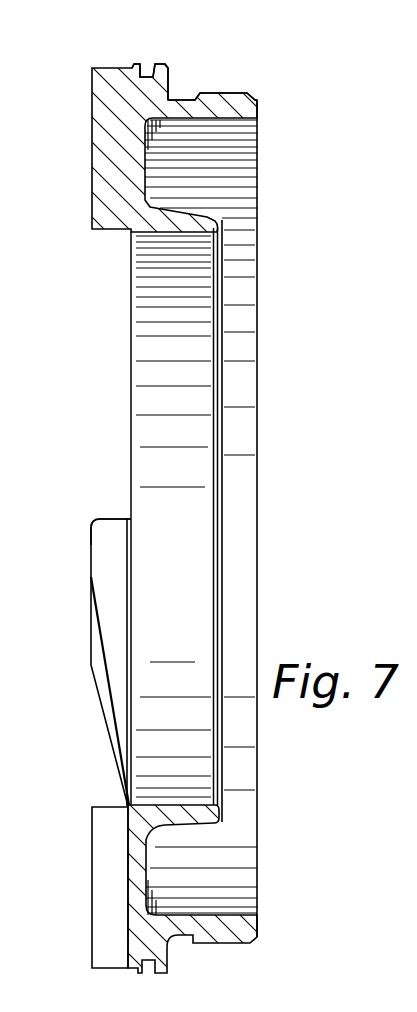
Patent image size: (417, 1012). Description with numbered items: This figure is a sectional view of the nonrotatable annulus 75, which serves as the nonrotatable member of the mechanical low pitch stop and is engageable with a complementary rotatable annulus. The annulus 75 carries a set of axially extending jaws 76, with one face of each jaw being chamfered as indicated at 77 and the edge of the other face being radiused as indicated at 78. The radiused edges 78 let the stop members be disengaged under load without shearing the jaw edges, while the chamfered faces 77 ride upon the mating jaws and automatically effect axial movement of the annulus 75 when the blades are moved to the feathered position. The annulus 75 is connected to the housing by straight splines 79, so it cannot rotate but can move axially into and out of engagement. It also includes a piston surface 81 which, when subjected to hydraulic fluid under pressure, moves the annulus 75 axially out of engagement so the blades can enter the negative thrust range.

The nonrotatable annulus 75 is at (258, 430).
The axially extending jaws 76 is at (92, 170).
The chamfered face 77 is at (115, 710).
The radiused edge 78 is at (98, 518).
The straight splines 79 is at (233, 98).
The piston surface 81 is at (160, 78).